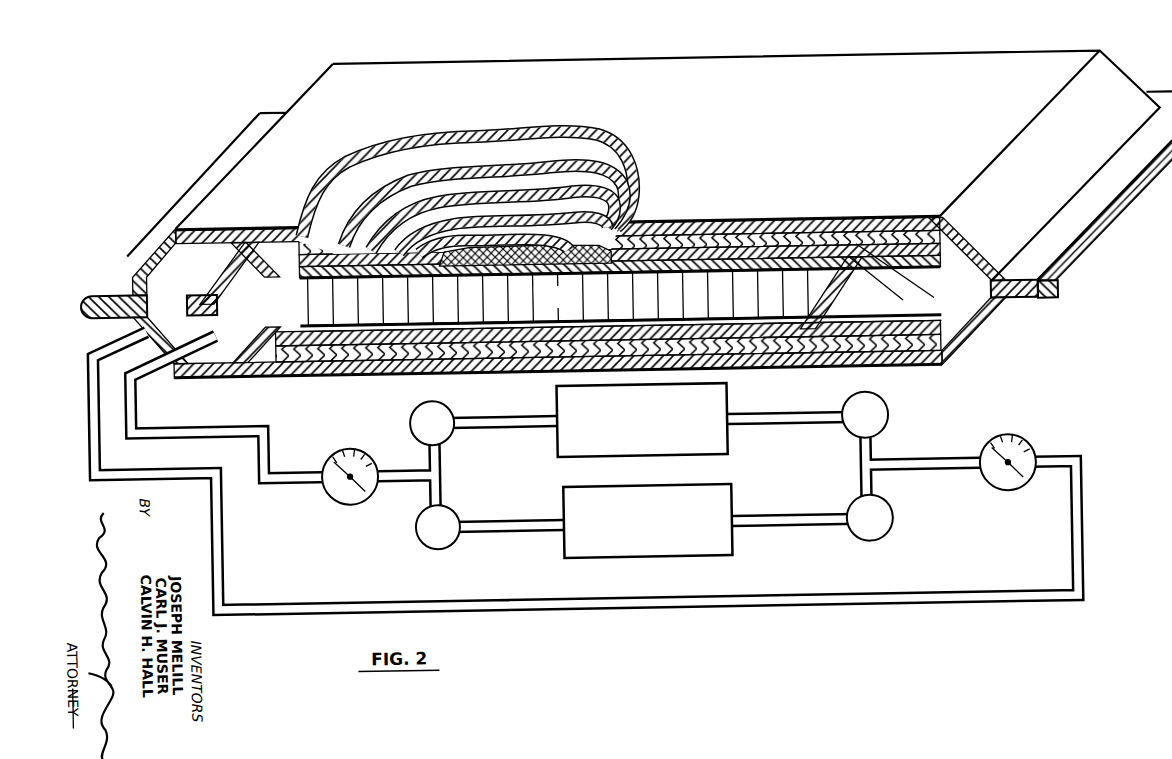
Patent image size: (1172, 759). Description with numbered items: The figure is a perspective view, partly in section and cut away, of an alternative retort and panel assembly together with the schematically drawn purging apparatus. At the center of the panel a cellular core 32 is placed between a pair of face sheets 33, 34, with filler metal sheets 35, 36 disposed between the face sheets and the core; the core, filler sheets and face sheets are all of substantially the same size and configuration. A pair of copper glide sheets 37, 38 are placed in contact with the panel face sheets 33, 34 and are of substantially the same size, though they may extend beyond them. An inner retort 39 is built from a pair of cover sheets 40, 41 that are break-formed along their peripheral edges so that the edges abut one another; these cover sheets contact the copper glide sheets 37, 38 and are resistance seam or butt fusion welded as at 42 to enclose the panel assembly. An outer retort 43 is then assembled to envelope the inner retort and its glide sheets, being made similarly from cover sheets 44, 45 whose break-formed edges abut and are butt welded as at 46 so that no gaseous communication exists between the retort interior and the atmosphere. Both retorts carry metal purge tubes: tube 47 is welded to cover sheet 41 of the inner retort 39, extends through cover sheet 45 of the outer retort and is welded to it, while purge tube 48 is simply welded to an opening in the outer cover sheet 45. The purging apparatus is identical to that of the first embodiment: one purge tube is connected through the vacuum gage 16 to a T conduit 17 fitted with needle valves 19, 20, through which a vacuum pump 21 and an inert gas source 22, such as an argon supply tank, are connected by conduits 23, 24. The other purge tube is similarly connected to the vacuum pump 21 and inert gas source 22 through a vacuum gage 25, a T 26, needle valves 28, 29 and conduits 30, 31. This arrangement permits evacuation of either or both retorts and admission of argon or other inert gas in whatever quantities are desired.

The vacuum gage 16 is at (337, 496).
The T conduit 17 is at (430, 486).
The needle valve 19 is at (448, 408).
The needle valve 20 is at (454, 510).
The vacuum pump 21 is at (725, 403).
The inert gas source 22 is at (716, 506).
The conduit 23 is at (516, 431).
The conduit 24 is at (526, 527).
The vacuum gage 25 is at (1027, 453).
The T 26 is at (864, 473).
The needle valve 28 is at (878, 421).
The needle valve 29 is at (869, 537).
The conduit 30 is at (771, 417).
The conduit 31 is at (784, 522).
The cellular core 32 is at (621, 296).
The face sheet 33 is at (296, 328).
The face sheet 34 is at (307, 268).
The filler metal sheet 35 is at (419, 241).
The filler metal sheet 36 is at (690, 319).
The copper glide sheet 37 is at (389, 194).
The copper glide sheet 38 is at (884, 271).
The inner retort 39 is at (231, 256).
The cover sheet 40 is at (412, 167).
The cover sheet 41 is at (306, 376).
The weld 42 is at (190, 296).
The outer retort 43 is at (128, 247).
The cover sheet 44 is at (351, 104).
The cover sheet 45 is at (389, 377).
The butt weld 46 is at (83, 292).
The purge tube 47 is at (166, 358).
The purge tube 48 is at (106, 349).